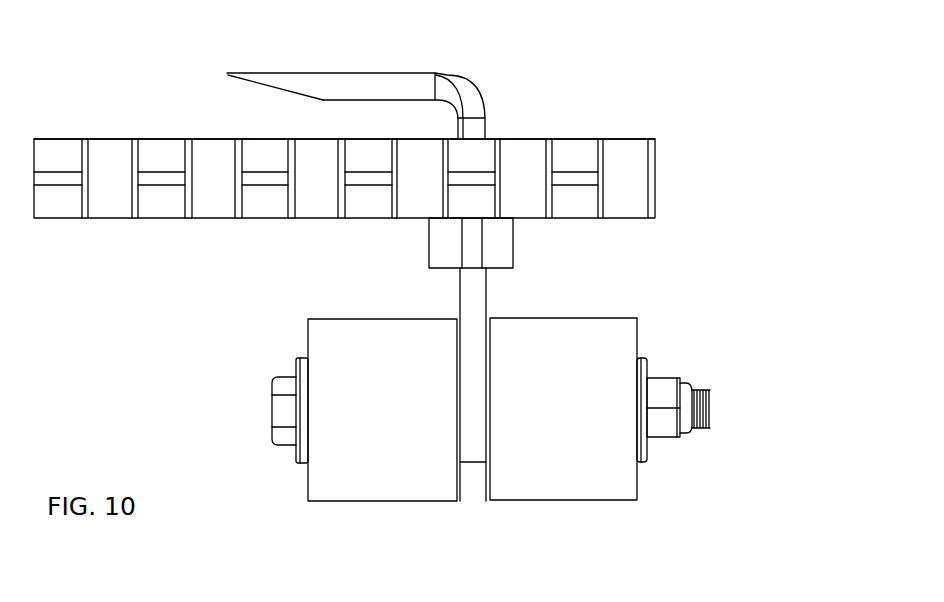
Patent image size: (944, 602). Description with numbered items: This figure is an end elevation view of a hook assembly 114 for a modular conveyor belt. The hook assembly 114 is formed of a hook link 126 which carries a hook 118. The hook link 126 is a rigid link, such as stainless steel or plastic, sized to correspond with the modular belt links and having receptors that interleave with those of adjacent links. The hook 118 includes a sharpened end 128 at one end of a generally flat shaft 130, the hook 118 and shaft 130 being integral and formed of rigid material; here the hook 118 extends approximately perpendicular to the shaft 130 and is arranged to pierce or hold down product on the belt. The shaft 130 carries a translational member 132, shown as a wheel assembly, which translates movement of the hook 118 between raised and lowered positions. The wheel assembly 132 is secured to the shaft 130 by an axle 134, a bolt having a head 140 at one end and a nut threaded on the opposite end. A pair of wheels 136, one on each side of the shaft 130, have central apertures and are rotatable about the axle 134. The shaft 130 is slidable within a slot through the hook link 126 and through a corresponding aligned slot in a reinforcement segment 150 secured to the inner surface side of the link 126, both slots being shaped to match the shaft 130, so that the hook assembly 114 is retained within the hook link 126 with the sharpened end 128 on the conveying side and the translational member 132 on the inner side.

The hook assembly 114 is at (684, 85).
The hook 118 is at (358, 78).
The hook link 126 is at (207, 203).
The sharpened end 128 is at (262, 82).
The shaft 130 is at (479, 288).
The translational member 132 is at (658, 298).
The axle 134 is at (710, 409).
The wheels 136 is at (337, 475).
The head 140 is at (282, 395).
The reinforcement segment 150 is at (512, 241).